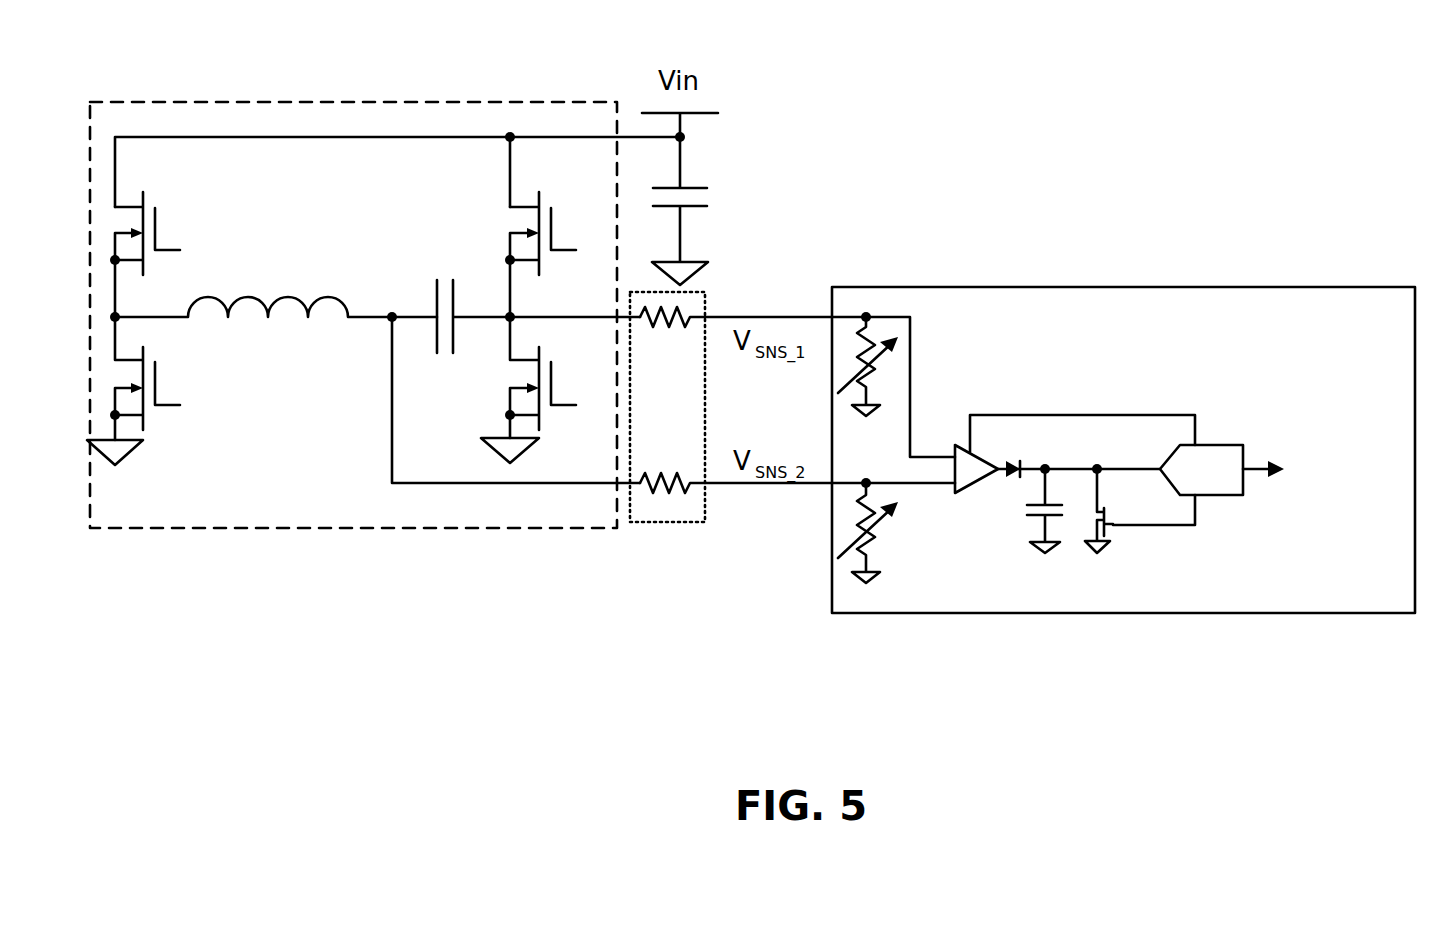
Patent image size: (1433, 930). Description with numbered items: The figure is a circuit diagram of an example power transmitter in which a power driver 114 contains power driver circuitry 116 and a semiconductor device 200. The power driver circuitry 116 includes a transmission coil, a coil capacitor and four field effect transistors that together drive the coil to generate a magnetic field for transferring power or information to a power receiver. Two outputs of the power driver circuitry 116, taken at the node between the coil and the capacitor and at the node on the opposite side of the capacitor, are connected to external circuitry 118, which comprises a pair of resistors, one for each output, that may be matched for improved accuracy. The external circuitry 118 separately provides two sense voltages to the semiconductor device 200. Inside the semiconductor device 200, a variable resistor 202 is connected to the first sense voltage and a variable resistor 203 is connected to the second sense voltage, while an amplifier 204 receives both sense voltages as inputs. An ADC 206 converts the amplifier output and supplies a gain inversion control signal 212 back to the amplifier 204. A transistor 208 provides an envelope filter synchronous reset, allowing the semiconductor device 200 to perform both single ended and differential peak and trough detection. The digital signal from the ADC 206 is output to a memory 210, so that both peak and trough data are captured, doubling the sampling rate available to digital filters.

The power driver 114 is at (311, 53).
The power driver circuitry 116 is at (413, 101).
The external circuitry 118 is at (651, 523).
The semiconductor device 200 is at (940, 287).
The variable resistor 202 is at (840, 361).
The variable resistor 203 is at (840, 525).
The amplifier 204 is at (960, 492).
The ADC 206 is at (1225, 445).
The transistor 208 is at (1108, 515).
The memory 210 is at (1318, 463).
The gain inversion control signal 212 is at (1090, 413).